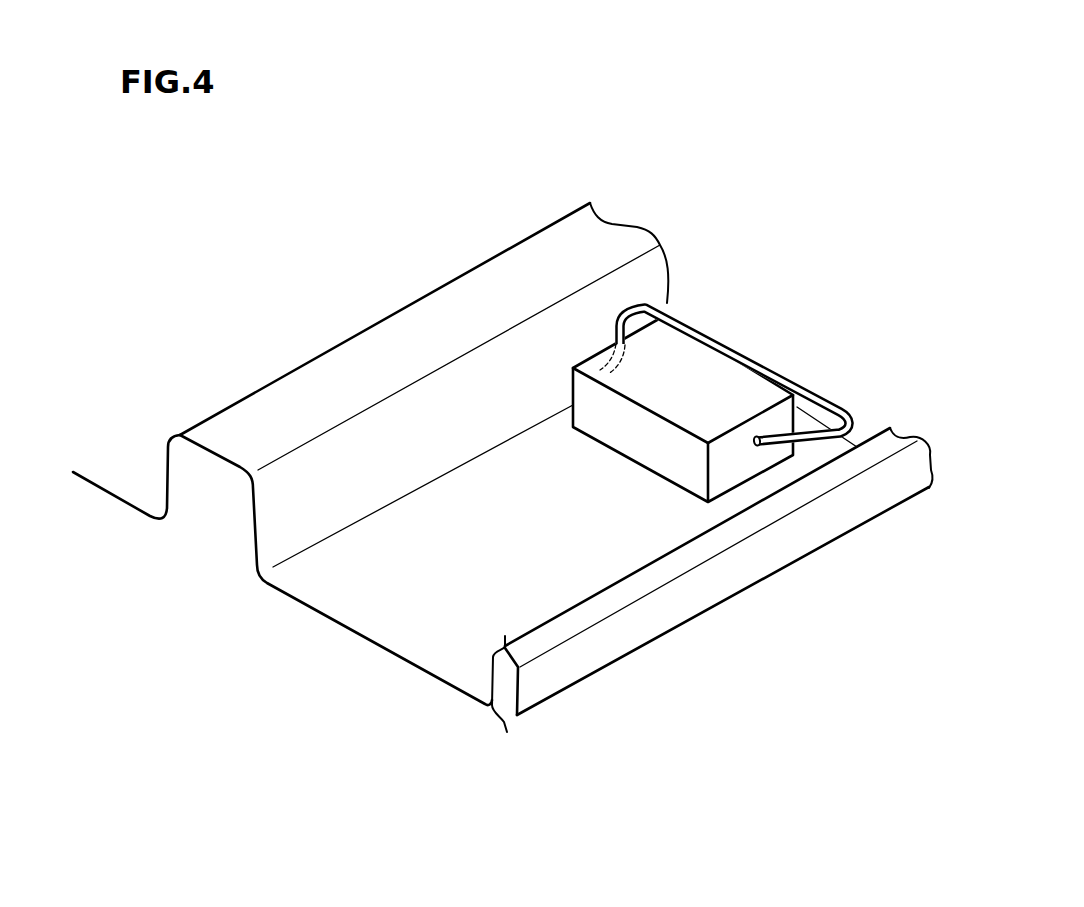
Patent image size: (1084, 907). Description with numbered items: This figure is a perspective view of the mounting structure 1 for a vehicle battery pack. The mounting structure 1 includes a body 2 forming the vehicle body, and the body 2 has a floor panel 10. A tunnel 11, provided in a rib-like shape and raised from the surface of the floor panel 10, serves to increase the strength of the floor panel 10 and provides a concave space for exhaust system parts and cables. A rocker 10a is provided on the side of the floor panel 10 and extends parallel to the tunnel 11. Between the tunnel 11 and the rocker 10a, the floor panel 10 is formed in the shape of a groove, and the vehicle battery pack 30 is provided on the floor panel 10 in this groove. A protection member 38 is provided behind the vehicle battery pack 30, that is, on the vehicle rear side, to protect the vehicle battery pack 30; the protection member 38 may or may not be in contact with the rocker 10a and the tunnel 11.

The mounting structure 1 is at (784, 171).
The body 2 is at (255, 585).
The floor panel 10 is at (415, 605).
The rocker 10a is at (592, 655).
The tunnel 11 is at (250, 425).
The vehicle battery pack 30 is at (668, 457).
The protection member 38 is at (770, 357).